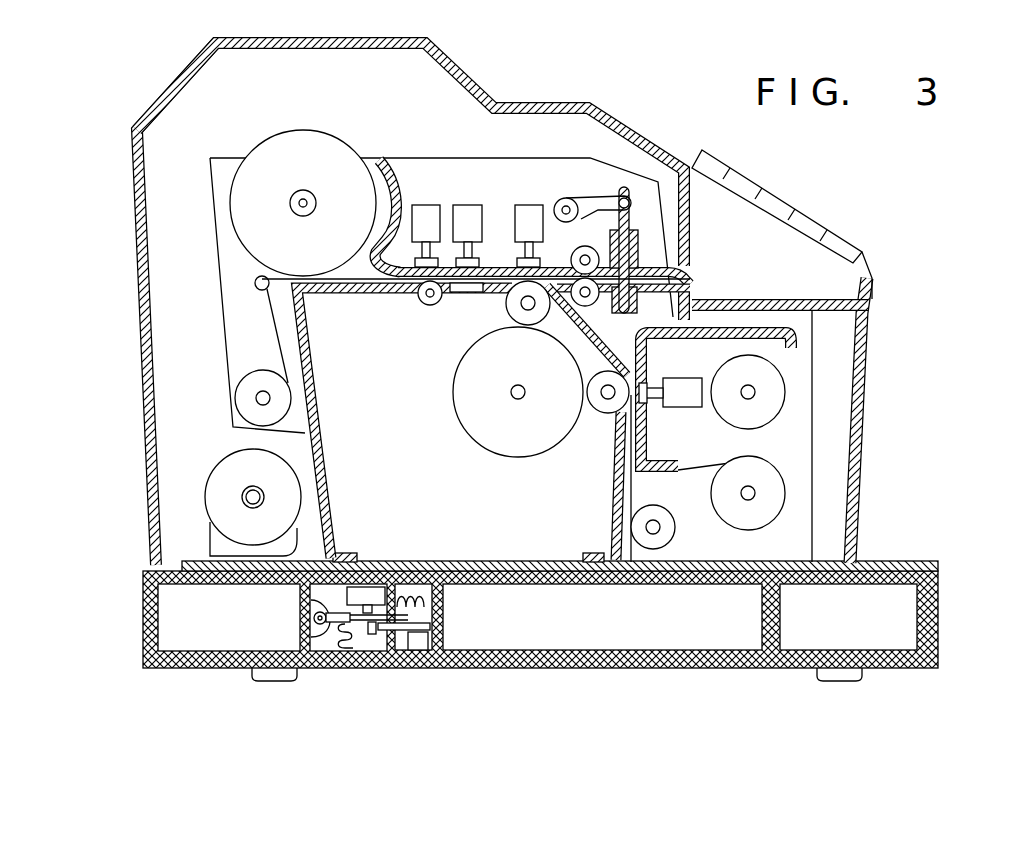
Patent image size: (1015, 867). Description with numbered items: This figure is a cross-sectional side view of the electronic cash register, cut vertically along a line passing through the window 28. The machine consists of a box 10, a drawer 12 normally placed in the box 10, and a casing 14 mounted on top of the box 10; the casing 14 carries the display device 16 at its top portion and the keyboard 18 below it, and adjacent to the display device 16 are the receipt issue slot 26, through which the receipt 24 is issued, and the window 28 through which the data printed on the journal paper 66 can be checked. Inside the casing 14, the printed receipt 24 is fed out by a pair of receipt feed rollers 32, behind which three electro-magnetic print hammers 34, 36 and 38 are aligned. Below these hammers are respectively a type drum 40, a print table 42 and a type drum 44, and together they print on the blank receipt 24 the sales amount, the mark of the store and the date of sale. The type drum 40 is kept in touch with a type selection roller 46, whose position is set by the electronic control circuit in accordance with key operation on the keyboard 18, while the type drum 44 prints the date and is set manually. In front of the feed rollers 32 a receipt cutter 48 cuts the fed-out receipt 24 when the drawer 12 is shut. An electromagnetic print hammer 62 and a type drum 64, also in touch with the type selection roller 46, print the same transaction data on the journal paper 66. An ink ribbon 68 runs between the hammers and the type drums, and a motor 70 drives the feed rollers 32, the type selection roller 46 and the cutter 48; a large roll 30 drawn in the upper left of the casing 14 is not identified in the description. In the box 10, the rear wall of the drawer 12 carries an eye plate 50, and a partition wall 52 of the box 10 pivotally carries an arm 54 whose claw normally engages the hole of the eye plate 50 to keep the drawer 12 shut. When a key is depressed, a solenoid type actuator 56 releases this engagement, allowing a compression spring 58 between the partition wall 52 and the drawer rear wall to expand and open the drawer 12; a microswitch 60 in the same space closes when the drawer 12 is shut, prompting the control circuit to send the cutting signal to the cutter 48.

The box 10 is at (871, 669).
The drawer 12 is at (940, 629).
The casing 14 is at (131, 272).
The display device 16 is at (454, 50).
The keyboard 18 is at (862, 257).
The receipt 24 is at (694, 261).
The receipt issue slot 26 is at (690, 278).
The window 28 is at (774, 300).
The supply roll 30 is at (334, 137).
The receipt feed rollers 32 is at (582, 249).
The electro-magnetic print hammer 34 is at (530, 204).
The electro-magnetic print hammer 36 is at (469, 204).
The electro-magnetic print hammer 38 is at (427, 204).
The type drum 40 is at (508, 304).
The print table 42 is at (467, 293).
The type drum 44 is at (423, 306).
The type selection roller 46 is at (521, 458).
The receipt cutter 48 is at (624, 220).
The eye plate 50 is at (373, 640).
The partition wall 52 is at (307, 619).
The arm 54 is at (334, 651).
The solenoid type actuator 56 is at (379, 585).
The compression spring 58 is at (419, 585).
The microswitch 60 is at (417, 651).
The electromagnetic print hammer 62 is at (683, 407).
The type drum 64 is at (600, 409).
The journal paper 66 is at (707, 466).
The ink ribbon 68 is at (259, 327).
The motor 70 is at (214, 471).